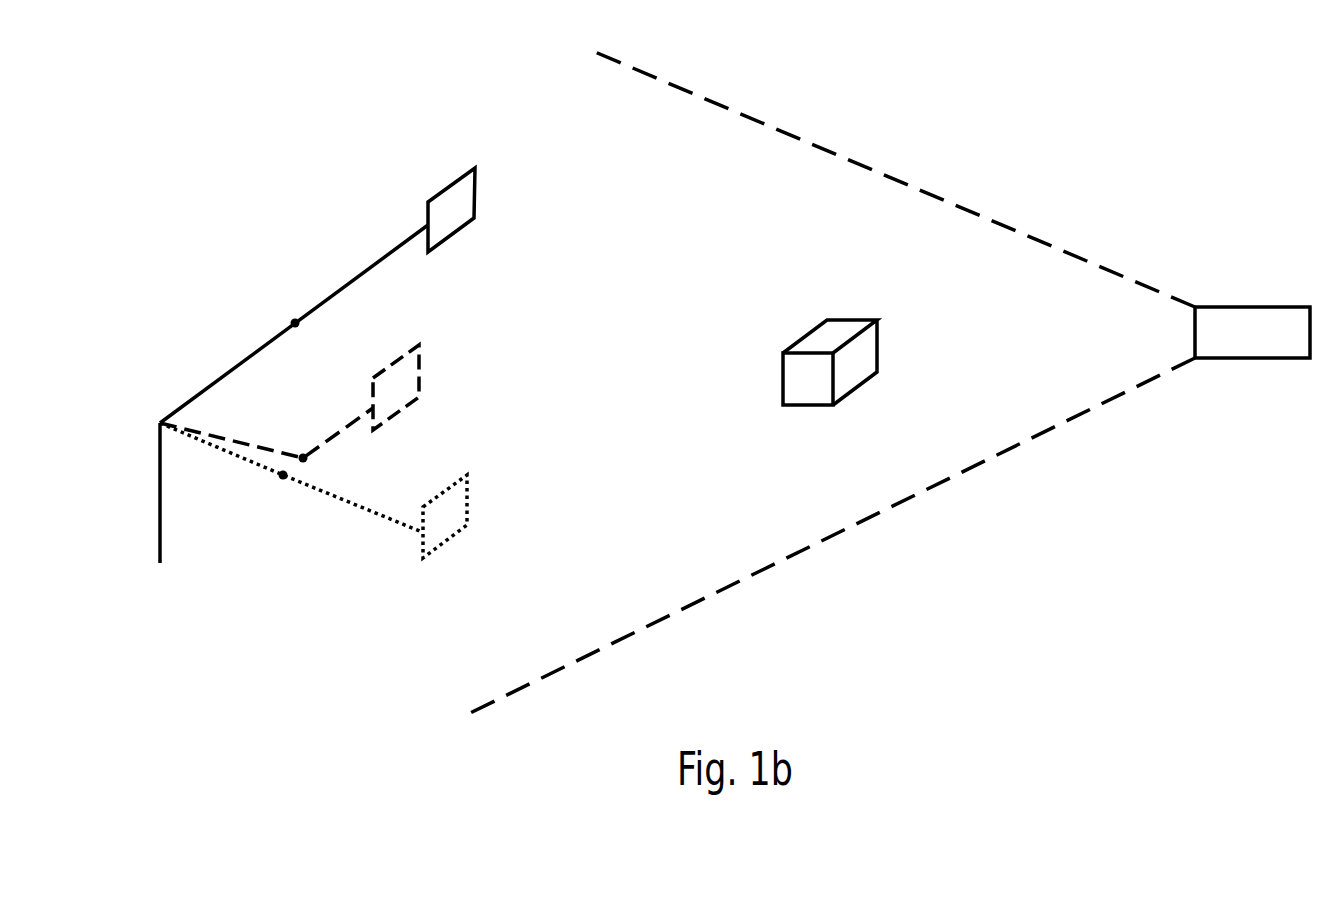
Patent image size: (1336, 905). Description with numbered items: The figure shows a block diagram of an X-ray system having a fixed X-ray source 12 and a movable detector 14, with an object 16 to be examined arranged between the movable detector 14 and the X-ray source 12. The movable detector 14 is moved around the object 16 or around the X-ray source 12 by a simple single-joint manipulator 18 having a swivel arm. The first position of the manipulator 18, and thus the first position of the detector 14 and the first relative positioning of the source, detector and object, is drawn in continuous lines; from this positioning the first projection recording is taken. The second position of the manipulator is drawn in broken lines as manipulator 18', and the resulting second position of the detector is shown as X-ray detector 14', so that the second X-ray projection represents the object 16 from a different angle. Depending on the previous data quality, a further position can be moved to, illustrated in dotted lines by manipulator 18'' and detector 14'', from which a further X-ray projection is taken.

The X-ray source 12 is at (1255, 307).
The movable detector 14 is at (451, 176).
The X-ray detector in second position 14' is at (397, 354).
The detector in further position 14'' is at (449, 483).
The object 16 is at (853, 320).
The single-joint manipulator 18 is at (294, 324).
The manipulator in second position 18' is at (266, 417).
The manipulator in further position 18'' is at (291, 477).